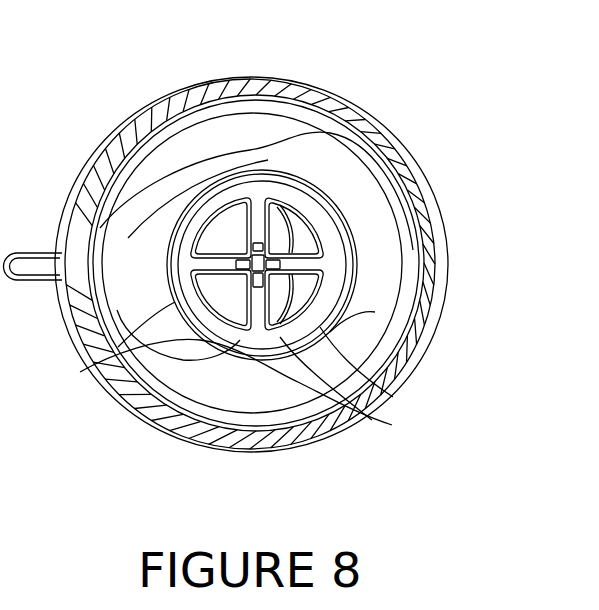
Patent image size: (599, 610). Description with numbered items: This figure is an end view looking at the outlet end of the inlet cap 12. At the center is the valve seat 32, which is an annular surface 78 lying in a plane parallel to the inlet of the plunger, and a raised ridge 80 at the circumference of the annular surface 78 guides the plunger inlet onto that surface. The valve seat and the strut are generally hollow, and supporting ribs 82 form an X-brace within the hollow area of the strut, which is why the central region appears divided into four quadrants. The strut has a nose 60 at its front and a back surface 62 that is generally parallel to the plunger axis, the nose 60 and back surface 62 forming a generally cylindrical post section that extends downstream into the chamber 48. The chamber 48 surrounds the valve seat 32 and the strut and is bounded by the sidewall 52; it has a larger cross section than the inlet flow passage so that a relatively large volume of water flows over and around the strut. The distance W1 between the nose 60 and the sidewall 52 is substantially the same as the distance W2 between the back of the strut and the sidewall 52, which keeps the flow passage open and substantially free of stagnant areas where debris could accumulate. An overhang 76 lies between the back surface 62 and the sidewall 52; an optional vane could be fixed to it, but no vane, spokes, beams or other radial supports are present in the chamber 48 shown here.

The inlet cap 12 is at (470, 88).
The valve seat 32 is at (318, 225).
The chamber 48 is at (243, 141).
The sidewall 52 is at (228, 440).
The nose 60 is at (118, 347).
The back surface 62 is at (403, 346).
The overhang 76 is at (330, 332).
The annular surface 78 is at (335, 315).
The raised ridge 80 is at (388, 390).
The supporting ribs 82 is at (318, 245).
The distance between nose and sidewall W1 is at (170, 274).
The distance between back of strut and sidewall W2 is at (402, 275).